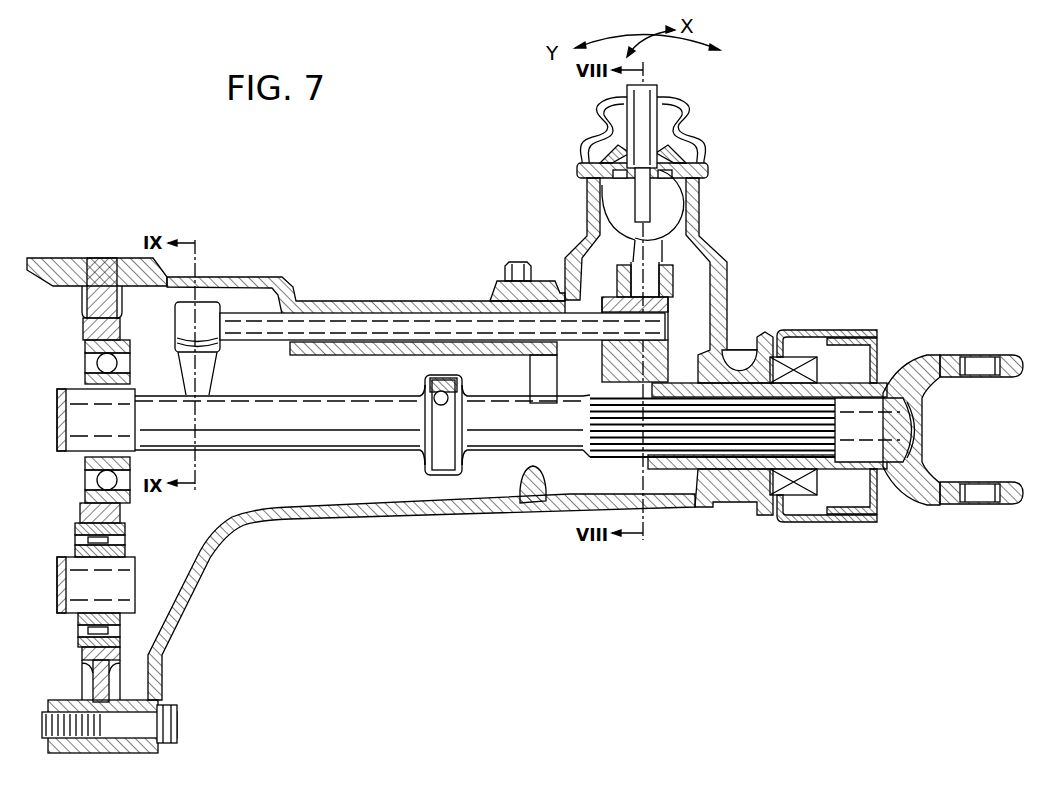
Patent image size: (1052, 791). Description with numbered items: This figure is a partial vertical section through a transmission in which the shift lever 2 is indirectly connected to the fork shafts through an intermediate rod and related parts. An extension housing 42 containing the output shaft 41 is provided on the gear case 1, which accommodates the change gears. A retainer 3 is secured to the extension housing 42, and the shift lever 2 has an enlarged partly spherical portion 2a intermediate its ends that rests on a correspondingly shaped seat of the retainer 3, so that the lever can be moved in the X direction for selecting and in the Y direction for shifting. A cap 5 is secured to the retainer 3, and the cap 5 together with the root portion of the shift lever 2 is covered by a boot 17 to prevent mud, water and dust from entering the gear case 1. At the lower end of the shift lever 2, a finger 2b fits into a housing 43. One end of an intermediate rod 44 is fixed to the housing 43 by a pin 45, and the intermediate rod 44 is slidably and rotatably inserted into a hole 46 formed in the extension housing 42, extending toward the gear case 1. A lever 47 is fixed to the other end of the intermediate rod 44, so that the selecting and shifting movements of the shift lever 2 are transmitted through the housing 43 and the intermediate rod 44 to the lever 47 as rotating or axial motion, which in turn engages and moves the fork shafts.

The gear case 1 is at (62, 257).
The shift lever 2 is at (657, 92).
The enlarged partly spherical portion 2a is at (652, 232).
The finger 2b is at (650, 280).
The retainer 3 is at (724, 250).
The cap 5 is at (689, 152).
The boot 17 is at (700, 133).
The output shaft 41 is at (300, 447).
The extension housing 42 is at (360, 300).
The housing 43 is at (607, 368).
The intermediate rod 44 is at (278, 323).
The pin 45 is at (642, 326).
The hole 46 is at (433, 313).
The lever 47 is at (181, 356).